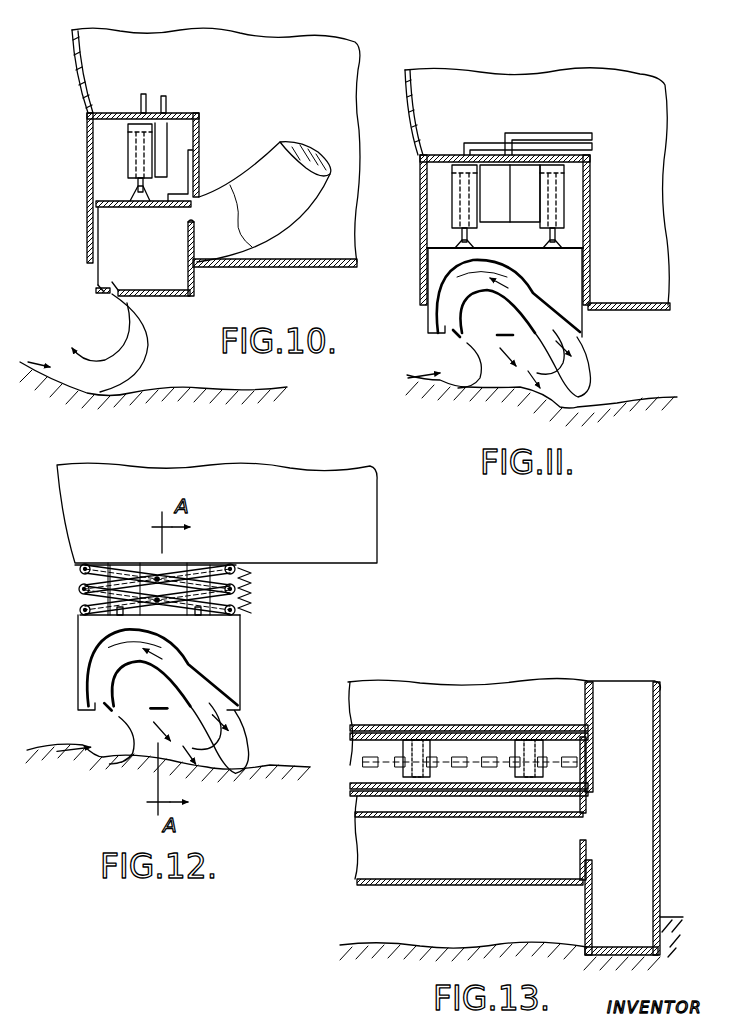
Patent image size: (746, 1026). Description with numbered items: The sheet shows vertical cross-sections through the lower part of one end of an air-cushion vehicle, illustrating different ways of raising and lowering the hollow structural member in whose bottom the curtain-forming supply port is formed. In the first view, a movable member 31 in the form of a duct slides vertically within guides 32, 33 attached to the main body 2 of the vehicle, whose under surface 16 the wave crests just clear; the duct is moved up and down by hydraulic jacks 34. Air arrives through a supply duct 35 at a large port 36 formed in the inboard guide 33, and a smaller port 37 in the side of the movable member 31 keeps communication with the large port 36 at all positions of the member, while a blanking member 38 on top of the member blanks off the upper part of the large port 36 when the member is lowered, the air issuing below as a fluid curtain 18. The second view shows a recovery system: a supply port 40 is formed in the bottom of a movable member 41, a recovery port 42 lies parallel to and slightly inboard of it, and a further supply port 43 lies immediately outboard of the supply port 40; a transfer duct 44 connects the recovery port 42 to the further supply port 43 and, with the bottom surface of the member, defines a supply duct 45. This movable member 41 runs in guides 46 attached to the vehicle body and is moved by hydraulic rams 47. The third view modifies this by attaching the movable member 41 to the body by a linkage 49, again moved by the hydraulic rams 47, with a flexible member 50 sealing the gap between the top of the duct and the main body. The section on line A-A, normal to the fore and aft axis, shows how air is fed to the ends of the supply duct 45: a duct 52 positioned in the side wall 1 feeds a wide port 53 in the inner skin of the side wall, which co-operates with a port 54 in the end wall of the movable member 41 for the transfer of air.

In FIG. 13, the side wall 1 is at (667, 688).
In FIG. 10, the main body 2 is at (83, 80).
In FIG. 11, the main body 2 is at (623, 100).
In FIG. 12, the main body 2 is at (217, 513).
In FIG. 13, the main body 2 is at (387, 692).
In FIG. 10, the under surface 16 is at (266, 270).
In FIG. 11, the under surface 16 is at (647, 310).
In FIG. 10, the fluid curtain 18 is at (140, 357).
In FIG. 10, the movable member 31 is at (92, 277).
In FIG. 10, the guide 32 is at (87, 235).
In FIG. 10, the inboard guide 33 is at (200, 175).
In FIG. 10, the hydraulic jack 34 is at (133, 157).
In FIG. 10, the supply duct 35 is at (270, 166).
In FIG. 10, the large port 36 is at (197, 230).
In FIG. 10, the smaller port 37 is at (187, 215).
In FIG. 10, the blanking member 38 is at (195, 155).
In FIG. 11, the supply port 40 is at (512, 348).
In FIG. 12, the supply port 40 is at (166, 722).
In FIG. 11, the movable member 41 is at (427, 327).
In FIG. 12, the movable member 41 is at (77, 650).
In FIG. 13, the movable member 41 is at (360, 882).
In FIG. 11, the recovery port 42 is at (579, 363).
In FIG. 12, the recovery port 42 is at (219, 738).
In FIG. 11, the further supply port 43 is at (444, 362).
In FIG. 12, the further supply port 43 is at (95, 739).
In FIG. 11, the transfer duct 44 is at (508, 295).
In FIG. 12, the transfer duct 44 is at (162, 667).
In FIG. 11, the supply duct 45 is at (517, 306).
In FIG. 12, the supply duct 45 is at (173, 681).
In FIG. 13, the supply duct 45 is at (360, 840).
In FIG. 11, the guide 46 is at (420, 280).
In FIG. 11, the hydraulic ram 47 is at (455, 213).
In FIG. 12, the hydraulic ram 47 is at (120, 565).
In FIG. 13, the hydraulic ram 47 is at (415, 743).
In FIG. 12, the linkage 49 is at (247, 578).
In FIG. 13, the linkage 49 is at (363, 763).
In FIG. 12, the flexible member 50 is at (247, 607).
In FIG. 13, the duct 52 is at (617, 690).
In FIG. 13, the wide port 53 is at (592, 832).
In FIG. 13, the co-operating port 54 is at (578, 832).